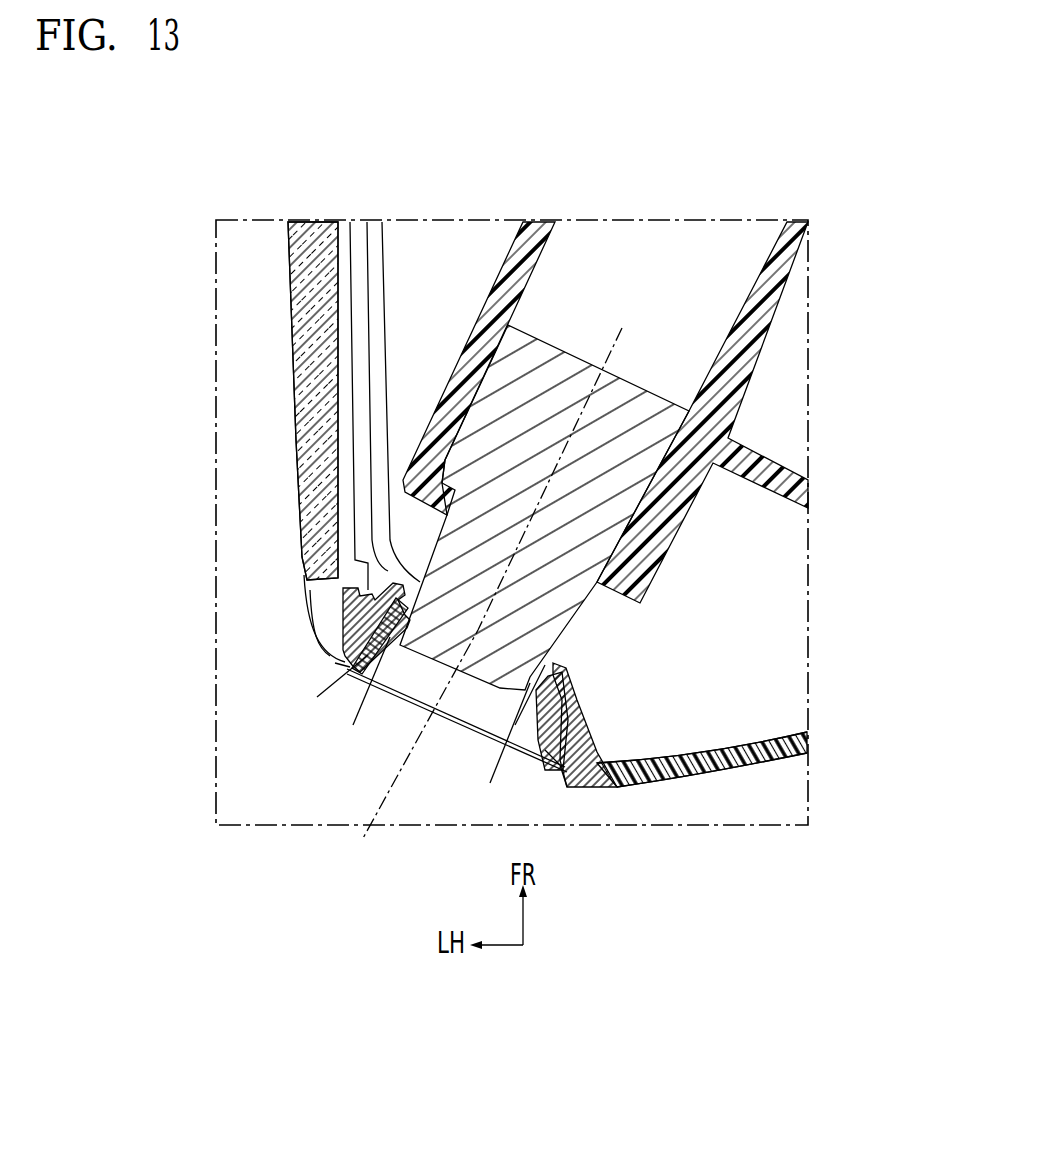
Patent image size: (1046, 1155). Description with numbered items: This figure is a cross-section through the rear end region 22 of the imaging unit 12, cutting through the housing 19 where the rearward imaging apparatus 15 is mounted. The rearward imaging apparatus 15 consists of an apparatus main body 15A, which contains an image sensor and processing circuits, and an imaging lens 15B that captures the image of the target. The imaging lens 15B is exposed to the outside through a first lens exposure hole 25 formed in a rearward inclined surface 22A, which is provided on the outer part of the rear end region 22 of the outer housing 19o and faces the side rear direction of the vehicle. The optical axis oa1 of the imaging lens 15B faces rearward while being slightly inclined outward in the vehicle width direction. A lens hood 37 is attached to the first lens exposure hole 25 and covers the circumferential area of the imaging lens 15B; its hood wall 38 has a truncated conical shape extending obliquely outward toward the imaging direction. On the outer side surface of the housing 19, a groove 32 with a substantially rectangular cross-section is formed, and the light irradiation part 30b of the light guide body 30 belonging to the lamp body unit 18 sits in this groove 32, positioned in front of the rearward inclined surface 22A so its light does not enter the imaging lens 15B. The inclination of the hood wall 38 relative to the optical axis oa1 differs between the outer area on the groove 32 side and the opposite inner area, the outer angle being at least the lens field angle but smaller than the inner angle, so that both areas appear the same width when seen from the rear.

The imaging unit 12 is at (700, 219).
The light irradiation part 30b is at (287, 375).
The light guide body 30 is at (229, 401).
The lamp body unit 18 is at (292, 491).
The rearward imaging apparatus 15 is at (408, 662).
The apparatus main body 15A is at (650, 432).
The imaging lens 15B is at (497, 692).
The groove 32 is at (310, 598).
The lens hood 37 is at (333, 661).
The optical axis oa1 is at (478, 598).
The hood wall 38 is at (540, 718).
The rearward inclined surface 22A is at (572, 796).
The first lens exposure hole 25 is at (567, 782).
The rear end region 22 is at (770, 763).
The outer housing 19o is at (730, 770).
The housing 19 is at (718, 928).